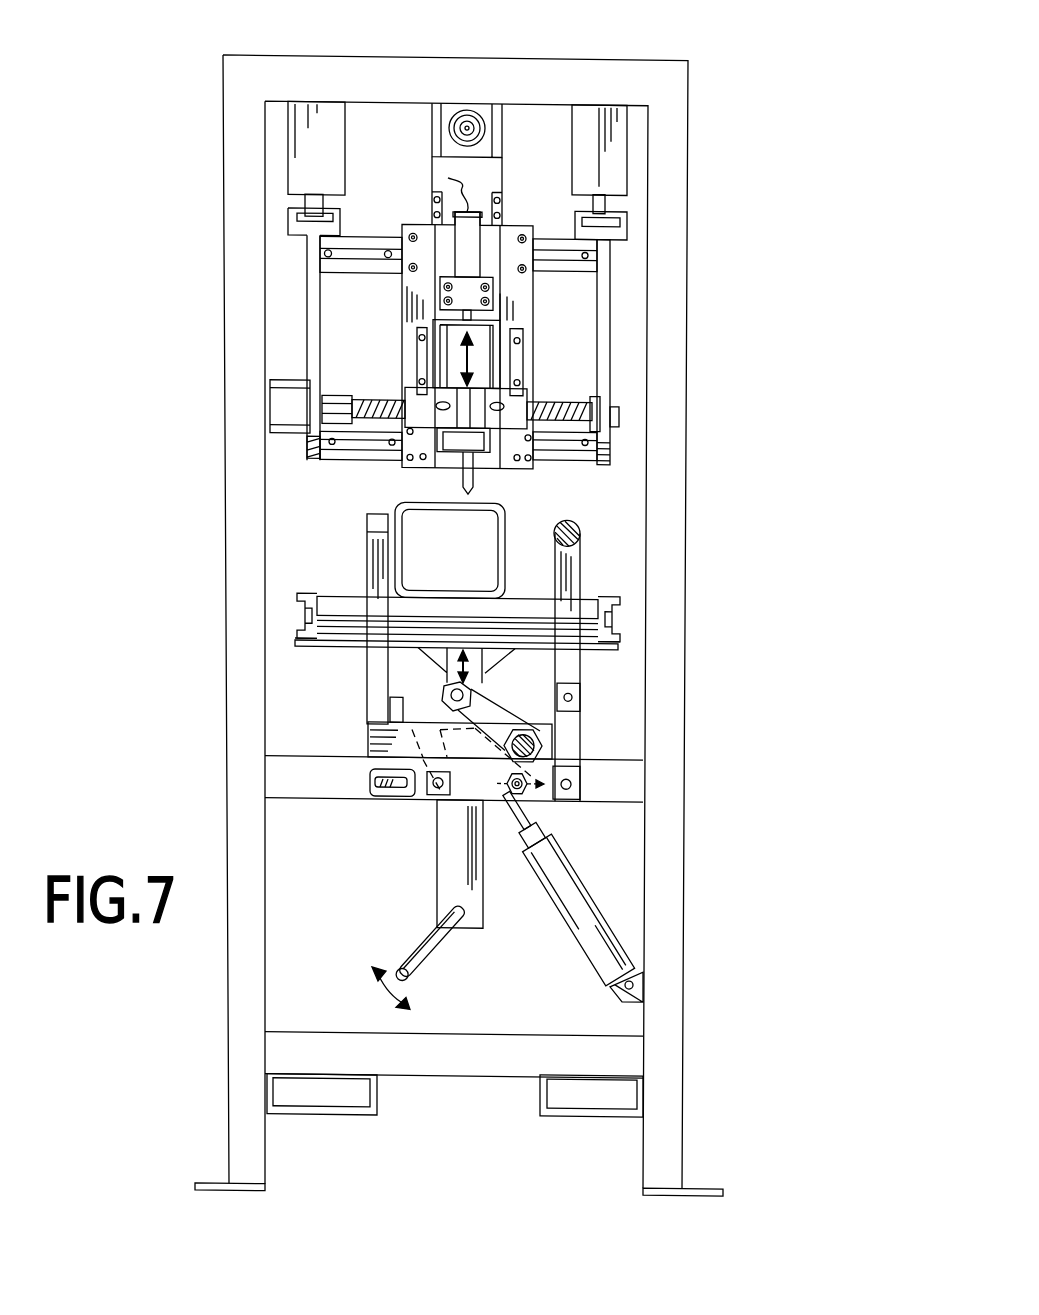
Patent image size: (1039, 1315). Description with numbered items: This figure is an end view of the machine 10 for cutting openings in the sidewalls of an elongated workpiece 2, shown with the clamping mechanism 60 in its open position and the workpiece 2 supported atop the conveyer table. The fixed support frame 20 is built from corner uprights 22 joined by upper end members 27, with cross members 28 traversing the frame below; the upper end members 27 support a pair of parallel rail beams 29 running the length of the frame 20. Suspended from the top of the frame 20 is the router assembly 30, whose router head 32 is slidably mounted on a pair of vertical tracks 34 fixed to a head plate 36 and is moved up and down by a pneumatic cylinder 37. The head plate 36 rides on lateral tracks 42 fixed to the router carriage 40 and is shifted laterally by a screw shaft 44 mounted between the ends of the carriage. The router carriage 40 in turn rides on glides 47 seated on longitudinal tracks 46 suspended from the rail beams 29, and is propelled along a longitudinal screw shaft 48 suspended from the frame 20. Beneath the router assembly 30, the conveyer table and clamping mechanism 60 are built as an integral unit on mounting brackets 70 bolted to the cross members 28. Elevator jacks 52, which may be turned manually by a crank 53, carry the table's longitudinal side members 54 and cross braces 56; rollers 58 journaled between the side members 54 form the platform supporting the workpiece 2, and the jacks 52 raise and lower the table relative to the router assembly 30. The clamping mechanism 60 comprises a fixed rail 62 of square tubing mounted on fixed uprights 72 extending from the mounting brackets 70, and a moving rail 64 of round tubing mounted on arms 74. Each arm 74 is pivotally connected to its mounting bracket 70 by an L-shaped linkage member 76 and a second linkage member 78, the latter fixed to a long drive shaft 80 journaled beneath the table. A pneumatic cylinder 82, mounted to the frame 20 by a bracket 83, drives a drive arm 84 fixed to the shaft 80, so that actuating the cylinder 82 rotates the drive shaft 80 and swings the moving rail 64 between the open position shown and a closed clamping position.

The workpiece 2 is at (505, 520).
The machine 10 is at (745, 99).
The fixed support frame 20 is at (364, 45).
The corner uprights 22 is at (235, 1024).
The upper end members 27 is at (563, 78).
The cross members 28 is at (356, 802).
The rail beams 29 is at (328, 150).
The router assembly 30 is at (549, 310).
The router head 32 is at (455, 442).
The vertical tracks 34 is at (418, 358).
The head plate 36 is at (520, 292).
The pneumatic cylinder 37 is at (468, 243).
The router carriage 40 is at (612, 284).
The lateral tracks 42 is at (348, 256).
The screw shaft 44 is at (572, 405).
The longitudinal tracks 46 is at (314, 205).
The glides 47 is at (338, 224).
The longitudinal screw shaft 48 is at (467, 110).
The elevator jacks 52 is at (445, 865).
The crank 53 is at (435, 940).
The side members 54 is at (609, 611).
The cross braces 56 is at (612, 658).
The rollers 58 is at (521, 617).
The clamping mechanism 60 is at (544, 656).
The fixed rail 62 is at (367, 522).
The moving rail 64 is at (582, 527).
The mounting brackets 70 is at (398, 742).
The fixed uprights 72 is at (373, 655).
The arms 74 is at (663, 625).
The linkage member 76 is at (482, 698).
The linkage member 78 is at (587, 758).
The drive shaft 80 is at (540, 729).
The pneumatic cylinder 82 is at (569, 897).
The bracket 83 is at (630, 997).
The drive arm 84 is at (477, 703).